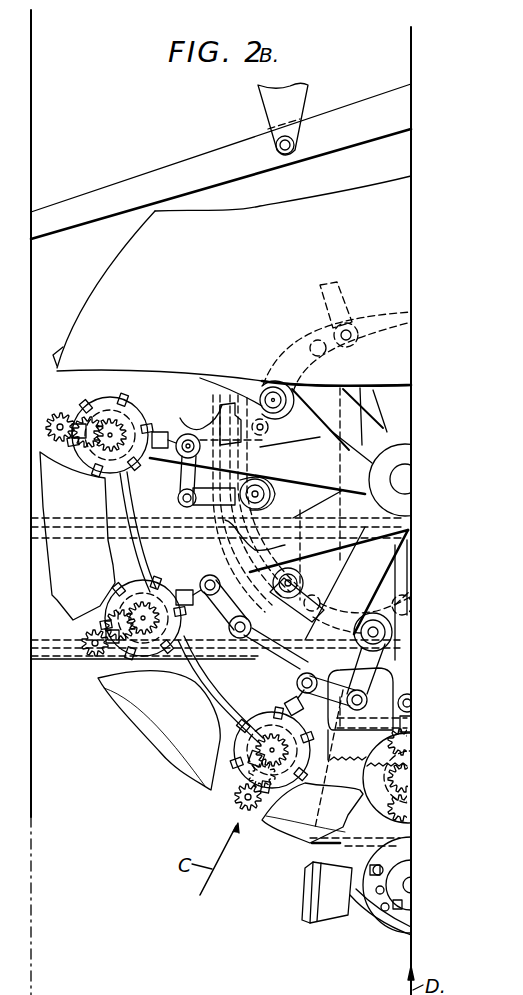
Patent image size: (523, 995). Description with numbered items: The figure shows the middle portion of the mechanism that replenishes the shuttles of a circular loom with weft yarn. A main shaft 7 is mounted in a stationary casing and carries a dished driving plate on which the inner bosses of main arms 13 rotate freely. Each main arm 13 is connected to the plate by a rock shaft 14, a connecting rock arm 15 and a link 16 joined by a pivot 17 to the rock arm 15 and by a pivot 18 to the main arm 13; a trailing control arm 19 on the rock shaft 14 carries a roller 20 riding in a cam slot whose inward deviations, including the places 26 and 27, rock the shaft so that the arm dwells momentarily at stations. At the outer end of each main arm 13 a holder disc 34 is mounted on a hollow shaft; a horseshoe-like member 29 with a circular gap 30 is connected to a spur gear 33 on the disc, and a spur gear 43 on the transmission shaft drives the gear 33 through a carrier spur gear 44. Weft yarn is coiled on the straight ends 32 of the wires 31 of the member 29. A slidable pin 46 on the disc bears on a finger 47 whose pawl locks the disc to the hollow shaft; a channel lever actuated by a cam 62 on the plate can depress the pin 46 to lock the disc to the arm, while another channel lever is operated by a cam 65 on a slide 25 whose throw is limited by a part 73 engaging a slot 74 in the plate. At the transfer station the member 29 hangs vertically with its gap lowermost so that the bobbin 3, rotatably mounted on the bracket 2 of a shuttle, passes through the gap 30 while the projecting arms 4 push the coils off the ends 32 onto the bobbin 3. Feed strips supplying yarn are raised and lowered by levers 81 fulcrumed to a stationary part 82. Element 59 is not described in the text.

The lever 81 is at (197, 172).
The stationary part 82 is at (297, 150).
The slot 74 is at (208, 380).
The slide 25 is at (236, 412).
The cam 65 is at (198, 427).
The part 73 is at (257, 450).
The main arm 13 is at (360, 435).
The main shaft 7 is at (403, 478).
The rock shaft 14 is at (265, 498).
The link 16 is at (180, 478).
The pivot 18 is at (208, 579).
The pivot 17 is at (241, 639).
The cam 62 is at (420, 682).
The connecting rock arm 15 is at (297, 604).
The place of deviation of the cam slot 26 is at (347, 628).
The roller 20 is at (413, 621).
The trailing control arm 19 is at (410, 601).
The place of deviation of the cam slot 27 is at (410, 587).
The slidable pin 46 is at (297, 688).
The guide 59 is at (340, 750).
The spur gear 43 is at (258, 741).
The holder disc 34 is at (245, 760).
The spur gear 33 is at (240, 801).
The carrier spur gear 44 is at (265, 792).
The finger 47 is at (407, 740).
The horseshoe-like member 29 is at (372, 857).
The circular gap 30 is at (378, 888).
The bobbin 3 is at (405, 871).
The straight ends of the wires 32 is at (405, 900).
The bracket 2 is at (410, 917).
The radially projecting arms 4 is at (373, 913).
The wires 31 is at (400, 907).